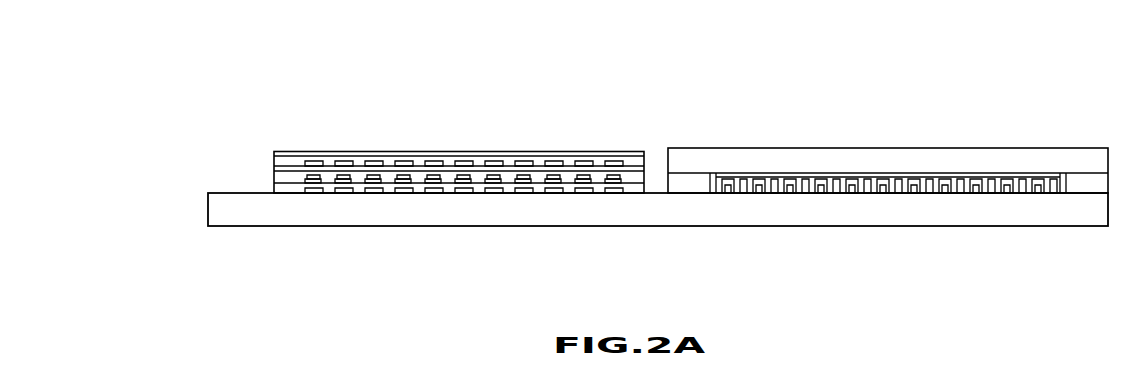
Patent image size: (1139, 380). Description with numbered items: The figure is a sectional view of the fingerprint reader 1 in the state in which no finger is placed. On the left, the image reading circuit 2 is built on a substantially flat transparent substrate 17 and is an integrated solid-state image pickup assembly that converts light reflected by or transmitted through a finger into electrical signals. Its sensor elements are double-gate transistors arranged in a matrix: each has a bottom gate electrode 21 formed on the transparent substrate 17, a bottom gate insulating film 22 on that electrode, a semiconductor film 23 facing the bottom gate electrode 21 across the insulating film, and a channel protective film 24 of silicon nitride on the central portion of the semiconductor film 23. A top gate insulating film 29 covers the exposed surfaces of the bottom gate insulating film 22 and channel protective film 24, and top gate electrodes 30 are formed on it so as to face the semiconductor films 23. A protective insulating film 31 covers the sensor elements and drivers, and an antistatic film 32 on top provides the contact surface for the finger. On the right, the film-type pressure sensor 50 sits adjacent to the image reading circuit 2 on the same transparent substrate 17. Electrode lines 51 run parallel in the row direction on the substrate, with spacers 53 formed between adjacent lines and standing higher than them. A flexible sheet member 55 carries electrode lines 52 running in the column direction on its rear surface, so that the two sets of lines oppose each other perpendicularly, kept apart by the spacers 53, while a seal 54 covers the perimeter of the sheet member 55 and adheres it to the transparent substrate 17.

The fingerprint reader 1 is at (964, 89).
The image reading circuit 2 is at (545, 143).
The transparent substrate 17 is at (248, 208).
The bottom gate electrode 21 is at (417, 190).
The bottom gate insulating film 22 is at (273, 187).
The semiconductor film 23 is at (370, 180).
The channel protective film 24 is at (335, 178).
The top gate insulating film 29 is at (273, 175).
The top gate electrode 30 is at (308, 162).
The protective insulating film 31 is at (273, 165).
The antistatic film 32 is at (273, 160).
The film-type pressure sensor 50 is at (730, 143).
The electrode lines 51 is at (738, 183).
The electrode lines 52 is at (882, 174).
The spacers 53 is at (727, 184).
The seal 54 is at (688, 183).
The flexible sheet member 55 is at (1030, 167).